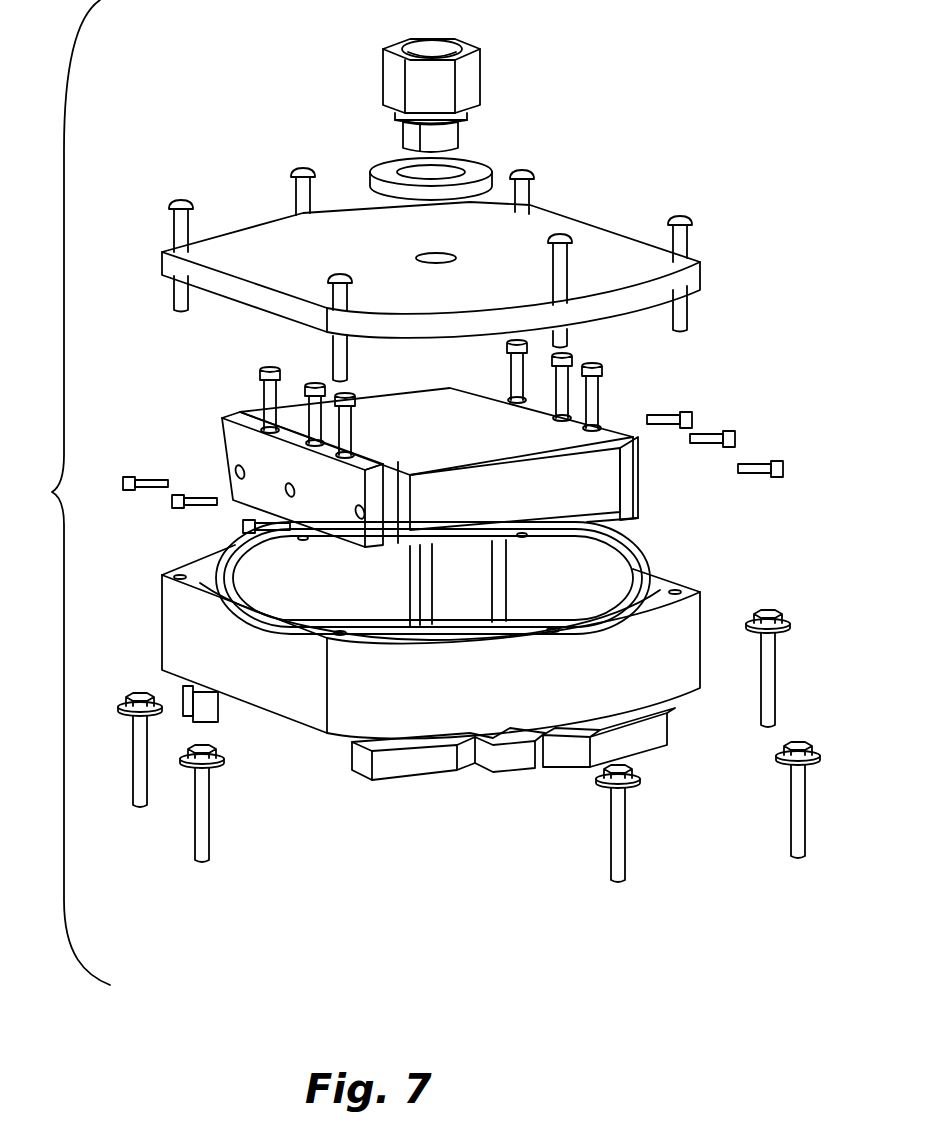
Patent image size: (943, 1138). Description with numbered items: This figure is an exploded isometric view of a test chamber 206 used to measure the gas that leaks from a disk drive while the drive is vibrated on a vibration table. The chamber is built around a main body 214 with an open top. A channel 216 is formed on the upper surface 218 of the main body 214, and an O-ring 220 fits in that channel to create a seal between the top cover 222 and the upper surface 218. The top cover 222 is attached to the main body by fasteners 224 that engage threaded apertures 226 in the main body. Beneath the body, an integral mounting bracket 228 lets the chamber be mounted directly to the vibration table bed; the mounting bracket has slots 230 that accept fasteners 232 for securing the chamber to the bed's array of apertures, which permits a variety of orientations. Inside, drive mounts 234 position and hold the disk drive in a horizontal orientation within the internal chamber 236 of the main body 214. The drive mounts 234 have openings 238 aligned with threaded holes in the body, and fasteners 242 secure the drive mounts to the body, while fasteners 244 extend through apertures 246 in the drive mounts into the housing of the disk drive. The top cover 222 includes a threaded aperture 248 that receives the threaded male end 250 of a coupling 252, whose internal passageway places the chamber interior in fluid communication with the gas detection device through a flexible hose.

The test chamber 206 is at (59, 492).
The main body 214 is at (685, 720).
The channel 216 is at (245, 565).
The upper surface 218 is at (243, 603).
The O-ring 220 is at (648, 557).
The top cover 222 is at (592, 242).
The fasteners 224 is at (181, 200).
The threaded apertures 226 is at (527, 537).
The mounting bracket 228 is at (414, 765).
The slots 230 is at (222, 716).
The fasteners 232 is at (142, 785).
The drive mounts 234 is at (228, 440).
The internal chamber 236 is at (372, 585).
The openings 238 is at (520, 413).
The fasteners 242 is at (313, 384).
The fasteners 244 is at (215, 506).
The apertures 246 is at (357, 506).
The threaded aperture 248 is at (456, 253).
The threaded male end 250 is at (460, 130).
The coupling 252 is at (482, 76).